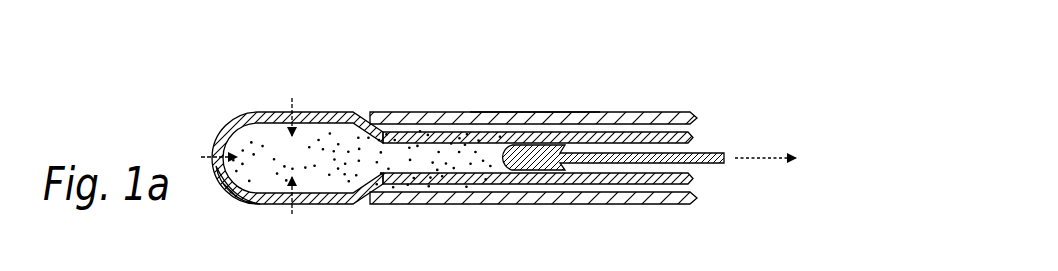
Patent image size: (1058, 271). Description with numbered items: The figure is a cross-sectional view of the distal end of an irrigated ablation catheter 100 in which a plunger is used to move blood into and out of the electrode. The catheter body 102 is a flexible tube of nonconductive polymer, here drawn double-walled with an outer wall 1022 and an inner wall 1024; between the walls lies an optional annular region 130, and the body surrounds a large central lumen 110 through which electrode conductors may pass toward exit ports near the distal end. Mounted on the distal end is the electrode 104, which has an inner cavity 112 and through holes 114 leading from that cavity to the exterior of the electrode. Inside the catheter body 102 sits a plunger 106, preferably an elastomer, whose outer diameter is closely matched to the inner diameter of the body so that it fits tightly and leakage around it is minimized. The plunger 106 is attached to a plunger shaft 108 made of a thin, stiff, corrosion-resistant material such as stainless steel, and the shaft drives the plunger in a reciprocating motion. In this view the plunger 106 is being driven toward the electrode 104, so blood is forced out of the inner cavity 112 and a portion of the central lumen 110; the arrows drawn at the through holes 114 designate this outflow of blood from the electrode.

The catheter 100 is at (447, 57).
The catheter body 102 is at (550, 81).
The outer wall 1022 is at (570, 110).
The inner wall 1024 is at (672, 122).
The electrode 104 is at (222, 205).
The plunger 106 is at (519, 184).
The plunger shaft 108 is at (718, 148).
The central lumen 110 is at (686, 148).
The inner cavity 112 is at (281, 173).
The through holes 114 is at (206, 154).
The annular region 130 is at (523, 110).